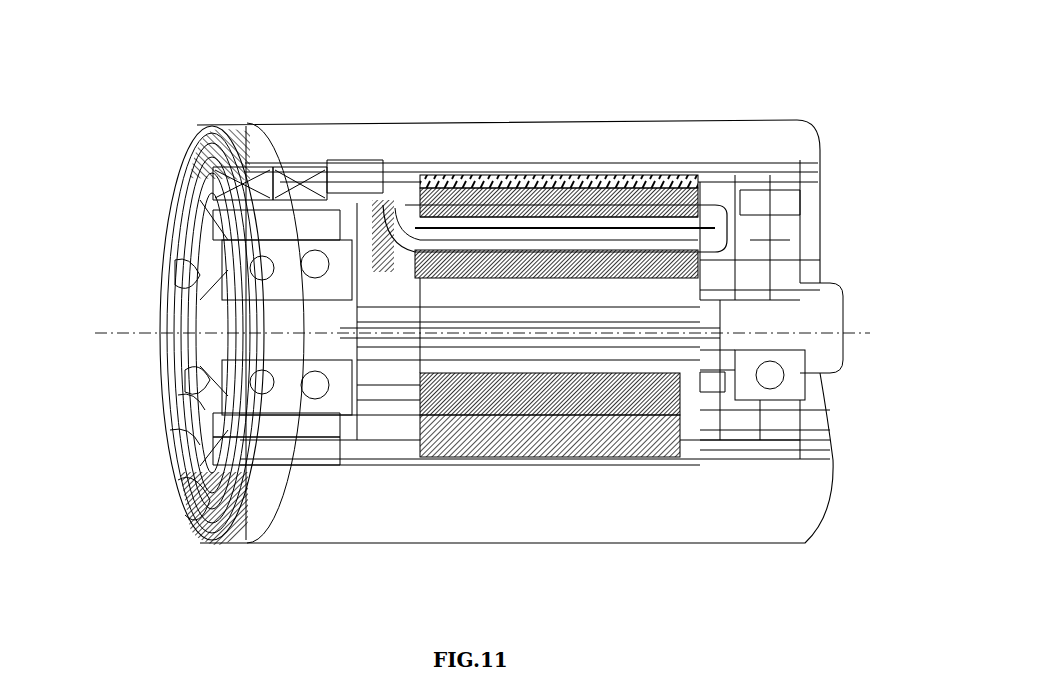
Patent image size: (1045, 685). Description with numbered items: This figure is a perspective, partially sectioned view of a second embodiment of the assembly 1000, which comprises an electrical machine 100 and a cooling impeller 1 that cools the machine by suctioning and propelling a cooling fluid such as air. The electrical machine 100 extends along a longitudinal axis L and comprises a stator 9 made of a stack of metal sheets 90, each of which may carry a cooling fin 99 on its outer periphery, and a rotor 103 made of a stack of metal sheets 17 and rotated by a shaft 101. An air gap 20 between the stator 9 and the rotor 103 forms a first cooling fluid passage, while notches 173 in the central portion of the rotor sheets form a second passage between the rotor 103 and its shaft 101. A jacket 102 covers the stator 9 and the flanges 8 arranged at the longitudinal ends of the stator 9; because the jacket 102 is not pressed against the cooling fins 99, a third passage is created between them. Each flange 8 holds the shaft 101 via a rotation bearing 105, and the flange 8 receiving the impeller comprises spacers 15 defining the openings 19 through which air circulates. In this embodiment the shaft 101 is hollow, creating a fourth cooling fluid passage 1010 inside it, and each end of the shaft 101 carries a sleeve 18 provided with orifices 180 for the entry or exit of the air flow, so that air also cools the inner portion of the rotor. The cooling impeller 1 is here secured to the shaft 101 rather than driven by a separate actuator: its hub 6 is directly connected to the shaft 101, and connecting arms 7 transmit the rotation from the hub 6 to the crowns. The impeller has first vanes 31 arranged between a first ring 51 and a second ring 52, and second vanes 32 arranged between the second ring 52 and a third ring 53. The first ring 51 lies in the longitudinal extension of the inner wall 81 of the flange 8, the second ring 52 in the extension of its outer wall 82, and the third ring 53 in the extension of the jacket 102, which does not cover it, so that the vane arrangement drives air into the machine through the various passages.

The assembly 1000 is at (217, 60).
The cooling impeller 1 is at (118, 163).
The electrical machine 100 is at (737, 97).
The spacers 15 is at (323, 183).
The second vanes 32 is at (208, 148).
The first vanes 31 is at (207, 187).
The outer wall 82 is at (288, 183).
The inner wall 81 is at (287, 217).
The jacket 102 is at (437, 133).
The stator 9 is at (490, 190).
The metal sheets 90 is at (533, 193).
The cooling fin 99 is at (615, 177).
The notches 173 is at (397, 257).
The metal sheets 17 is at (498, 397).
The fourth cooling fluid passage 1010 is at (655, 318).
The rotor 103 is at (600, 380).
The openings 19 is at (308, 417).
The longitudinal axis L is at (130, 333).
The rotation bearing 105 is at (310, 257).
The connecting arms 7 is at (187, 273).
The hub 6 is at (207, 380).
The first ring 51 is at (187, 397).
The second ring 52 is at (180, 437).
The third ring 53 is at (177, 487).
The shaft 101 is at (823, 300).
The air gap 20 is at (730, 233).
The sleeve 18 is at (720, 310).
The orifices 180 is at (718, 370).
The flange 8 is at (805, 425).